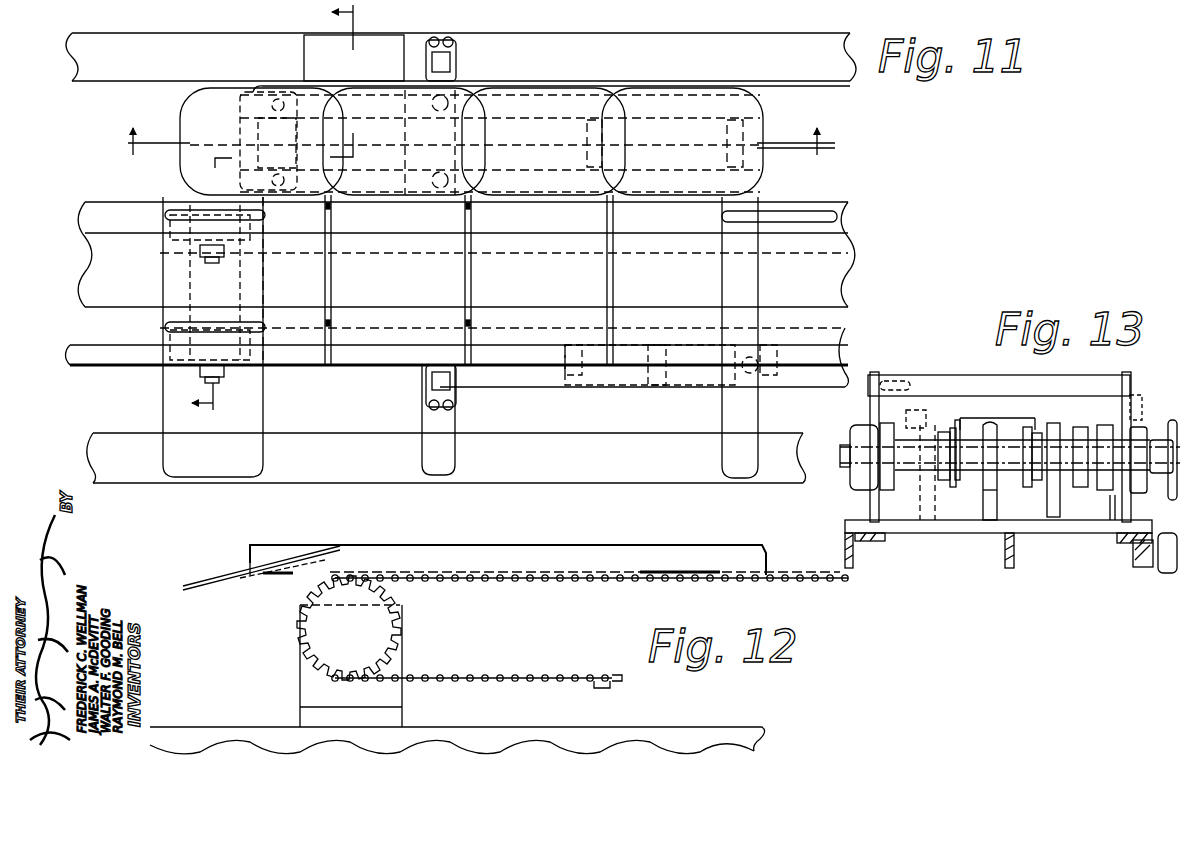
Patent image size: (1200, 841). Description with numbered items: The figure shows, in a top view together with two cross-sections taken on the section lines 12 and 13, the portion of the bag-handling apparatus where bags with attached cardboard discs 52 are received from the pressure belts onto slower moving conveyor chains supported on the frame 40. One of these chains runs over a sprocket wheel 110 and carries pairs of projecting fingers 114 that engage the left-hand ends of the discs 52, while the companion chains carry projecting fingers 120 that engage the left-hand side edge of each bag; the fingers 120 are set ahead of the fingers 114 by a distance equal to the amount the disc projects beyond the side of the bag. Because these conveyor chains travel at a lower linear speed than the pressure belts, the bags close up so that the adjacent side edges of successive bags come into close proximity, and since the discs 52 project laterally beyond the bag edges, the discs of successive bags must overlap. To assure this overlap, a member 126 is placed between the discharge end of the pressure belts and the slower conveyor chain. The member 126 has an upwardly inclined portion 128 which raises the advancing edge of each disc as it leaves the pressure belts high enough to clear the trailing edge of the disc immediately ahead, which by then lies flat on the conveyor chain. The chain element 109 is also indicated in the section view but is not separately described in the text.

In FIG. 11, the section line 12— 12 is at (479, 127).
In FIG. 11, the section line 13— 13 is at (288, 209).
In FIG. 11, the frame 40 is at (620, 478).
In FIG. 13, the frame 40 is at (900, 530).
In FIG. 12, the frame 40 is at (270, 727).
In FIG. 11, the cardboard disc 52 is at (186, 181).
In FIG. 12, the cardboard disc 52 is at (186, 588).
In FIG. 12, the conveyor chain 109 is at (525, 581).
In FIG. 12, the sprocket wheel 110 is at (385, 621).
In FIG. 13, the projecting fingers 114 is at (1098, 415).
In FIG. 12, the projecting fingers 114 is at (466, 681).
In FIG. 13, the projecting fingers 120 is at (1034, 413).
In FIG. 11, the member 126 is at (244, 152).
In FIG. 11, the upwardly inclined portion 128 is at (294, 150).
In FIG. 12, the upwardly inclined portion 128 is at (251, 568).